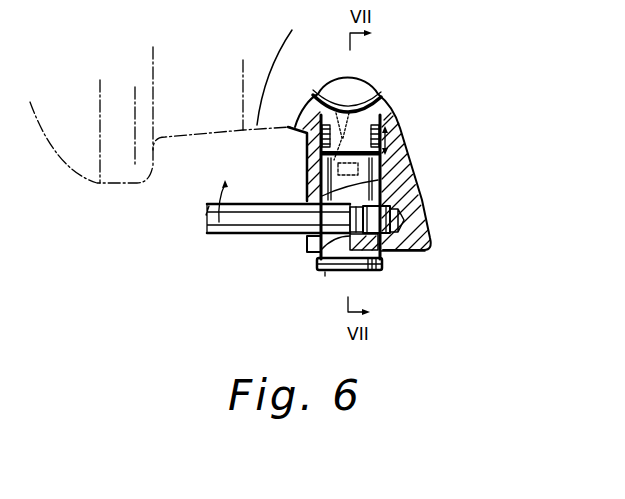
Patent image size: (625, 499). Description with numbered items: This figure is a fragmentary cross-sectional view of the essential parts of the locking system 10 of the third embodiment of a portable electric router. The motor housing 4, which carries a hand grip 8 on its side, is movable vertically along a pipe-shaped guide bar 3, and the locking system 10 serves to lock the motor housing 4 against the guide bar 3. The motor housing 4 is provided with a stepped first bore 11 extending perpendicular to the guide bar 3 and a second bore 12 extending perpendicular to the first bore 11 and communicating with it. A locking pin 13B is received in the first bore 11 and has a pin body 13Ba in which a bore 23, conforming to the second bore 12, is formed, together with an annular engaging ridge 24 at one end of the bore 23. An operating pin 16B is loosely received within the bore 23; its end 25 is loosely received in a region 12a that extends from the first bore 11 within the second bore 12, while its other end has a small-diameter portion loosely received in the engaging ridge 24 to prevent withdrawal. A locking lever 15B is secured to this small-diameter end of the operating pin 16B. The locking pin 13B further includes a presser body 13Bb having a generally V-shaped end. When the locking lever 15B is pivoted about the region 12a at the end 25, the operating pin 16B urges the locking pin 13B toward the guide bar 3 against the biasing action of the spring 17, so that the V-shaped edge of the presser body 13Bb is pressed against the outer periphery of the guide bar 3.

The guide bar 3 is at (357, 112).
The motor housing 4 is at (307, 176).
The hand grip 8 is at (110, 173).
The locking system 10 is at (289, 243).
The first bore 11 is at (386, 173).
The second bore 12 is at (310, 255).
The region of the second bore 12a is at (430, 251).
The locking pin 13B is at (382, 268).
The pin body 13Ba is at (384, 180).
The presser body 13Bb is at (374, 122).
The locking lever 15B is at (236, 233).
The operating pin 16B is at (364, 207).
The spring 17 is at (387, 124).
The bore 23 is at (325, 276).
The annular engaging ridge 24 is at (387, 254).
The end of the operating pin 25 is at (405, 221).